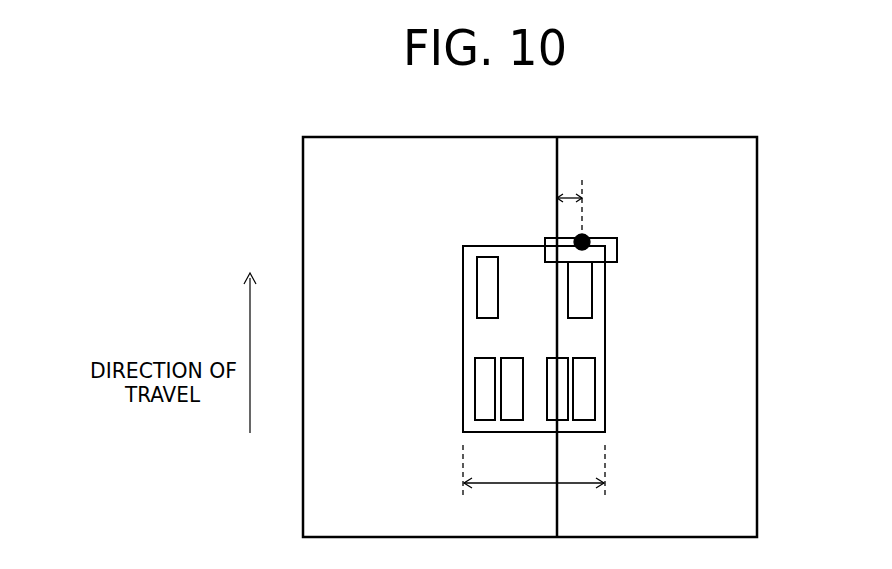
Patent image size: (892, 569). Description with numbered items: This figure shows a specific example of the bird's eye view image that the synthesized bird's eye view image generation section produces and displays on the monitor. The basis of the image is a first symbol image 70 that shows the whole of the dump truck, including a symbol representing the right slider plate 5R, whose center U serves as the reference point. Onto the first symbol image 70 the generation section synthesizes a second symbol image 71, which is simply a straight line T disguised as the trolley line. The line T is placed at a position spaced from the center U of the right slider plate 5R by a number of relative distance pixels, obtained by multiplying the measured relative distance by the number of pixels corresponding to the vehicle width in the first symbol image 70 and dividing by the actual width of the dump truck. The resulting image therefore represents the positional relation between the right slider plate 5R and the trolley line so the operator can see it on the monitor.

The first symbol image 70 is at (463, 333).
The second symbol image 71 is at (619, 276).
The right slider plate 5R is at (617, 255).
The trolley line T is at (557, 183).
The center of the right slider plate U is at (593, 229).